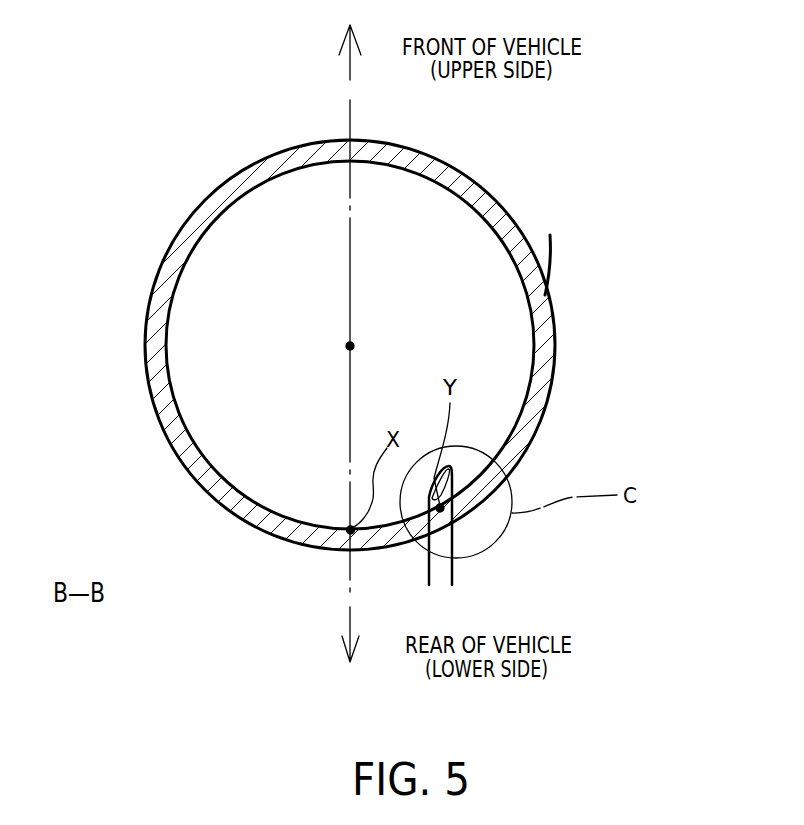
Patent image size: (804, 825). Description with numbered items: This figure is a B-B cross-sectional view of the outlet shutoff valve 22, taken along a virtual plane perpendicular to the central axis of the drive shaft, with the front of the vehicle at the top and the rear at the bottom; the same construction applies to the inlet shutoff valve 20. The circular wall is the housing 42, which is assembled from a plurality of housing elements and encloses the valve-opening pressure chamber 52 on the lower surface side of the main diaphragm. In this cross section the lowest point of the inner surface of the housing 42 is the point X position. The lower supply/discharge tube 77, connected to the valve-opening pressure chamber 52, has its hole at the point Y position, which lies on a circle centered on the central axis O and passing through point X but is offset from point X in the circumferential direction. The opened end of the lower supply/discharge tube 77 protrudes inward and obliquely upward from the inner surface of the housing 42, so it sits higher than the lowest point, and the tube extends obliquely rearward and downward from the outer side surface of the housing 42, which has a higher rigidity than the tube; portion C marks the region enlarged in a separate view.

The inlet shutoff valve 20 is at (557, 201).
The outlet shutoff valve 22 is at (402, 345).
The housing 42 is at (545, 295).
The valve-opening pressure chamber 52 is at (493, 353).
The lower supply/discharge tube 77 is at (455, 572).